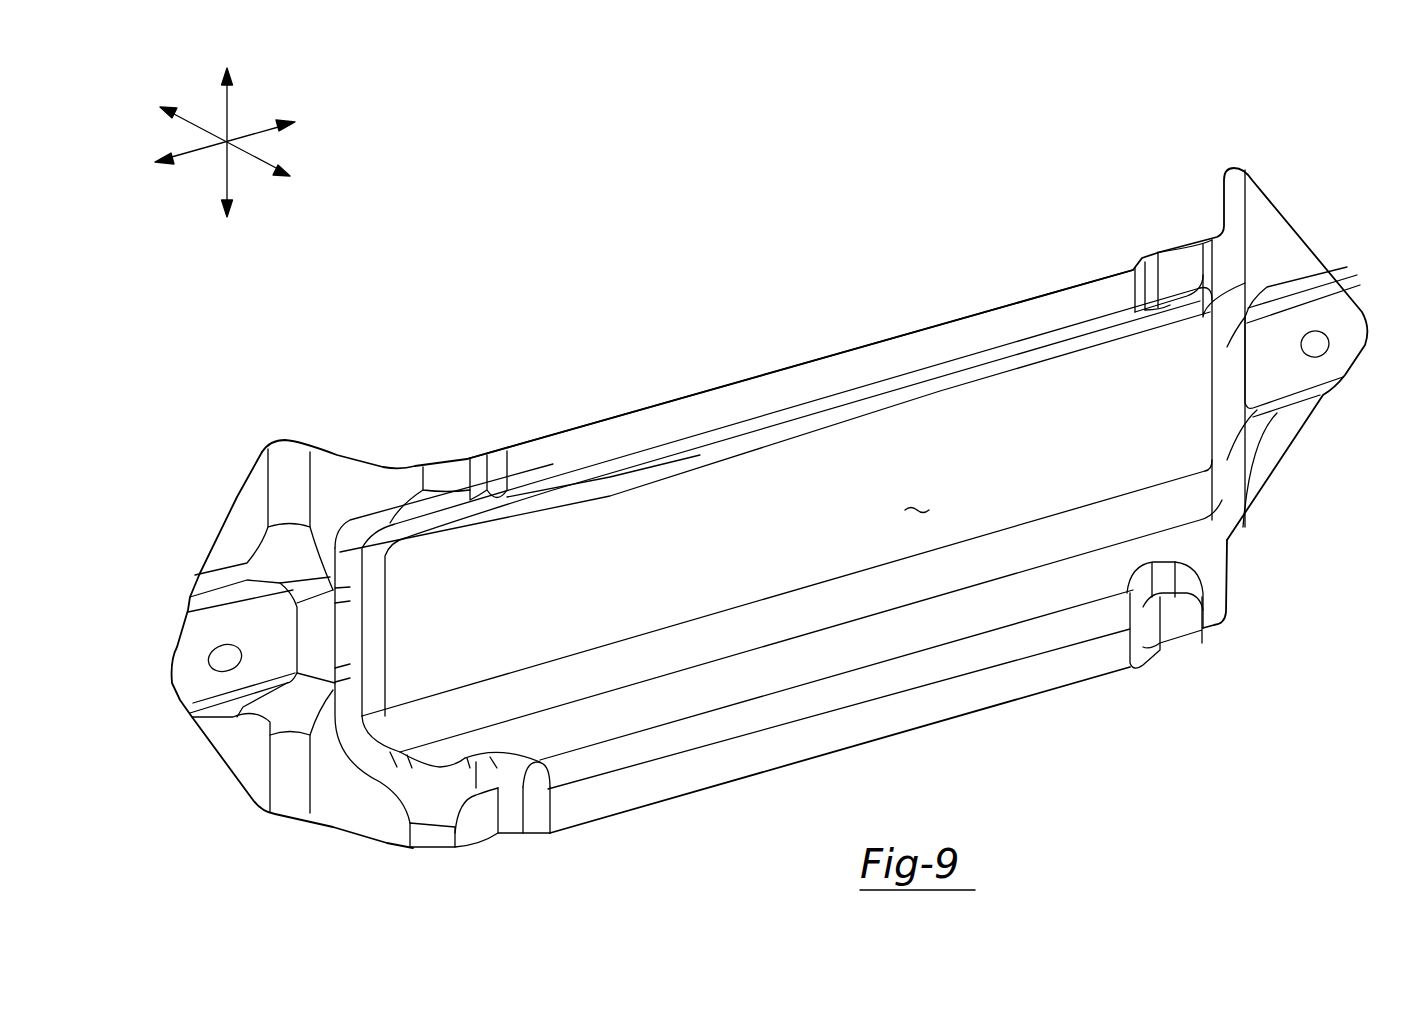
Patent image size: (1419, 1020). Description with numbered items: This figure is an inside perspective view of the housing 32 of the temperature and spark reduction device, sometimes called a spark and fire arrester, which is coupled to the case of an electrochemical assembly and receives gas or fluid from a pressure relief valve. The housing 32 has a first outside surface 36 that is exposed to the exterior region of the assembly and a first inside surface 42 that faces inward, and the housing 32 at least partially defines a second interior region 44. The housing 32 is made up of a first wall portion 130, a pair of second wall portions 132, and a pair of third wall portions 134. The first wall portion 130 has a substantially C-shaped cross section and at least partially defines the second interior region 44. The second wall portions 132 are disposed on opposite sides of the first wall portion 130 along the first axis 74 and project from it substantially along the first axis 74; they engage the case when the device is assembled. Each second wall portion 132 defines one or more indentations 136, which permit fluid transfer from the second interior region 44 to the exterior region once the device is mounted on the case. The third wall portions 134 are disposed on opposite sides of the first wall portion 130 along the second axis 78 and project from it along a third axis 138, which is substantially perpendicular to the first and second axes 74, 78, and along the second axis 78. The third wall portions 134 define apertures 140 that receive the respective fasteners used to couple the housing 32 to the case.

The housing 32 is at (1303, 160).
The first outside surface 36 is at (929, 327).
The first inside surface 42 is at (776, 502).
The second interior region 44 is at (513, 526).
The first axis 74 is at (230, 90).
The second axis 78 is at (262, 133).
The first wall portion 130 is at (1068, 380).
The second wall portion 132 is at (817, 390).
The third wall portion 134 is at (262, 502).
The indentation 136 is at (458, 478).
The third axis 138 is at (255, 162).
The aperture 140 is at (225, 658).